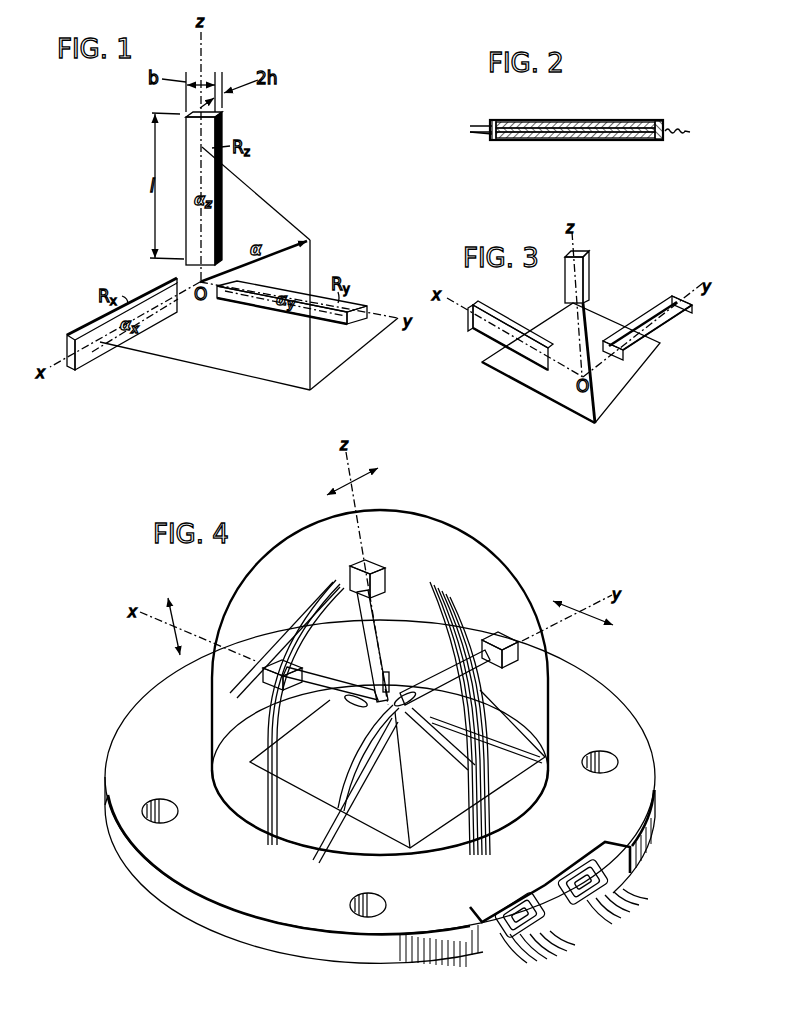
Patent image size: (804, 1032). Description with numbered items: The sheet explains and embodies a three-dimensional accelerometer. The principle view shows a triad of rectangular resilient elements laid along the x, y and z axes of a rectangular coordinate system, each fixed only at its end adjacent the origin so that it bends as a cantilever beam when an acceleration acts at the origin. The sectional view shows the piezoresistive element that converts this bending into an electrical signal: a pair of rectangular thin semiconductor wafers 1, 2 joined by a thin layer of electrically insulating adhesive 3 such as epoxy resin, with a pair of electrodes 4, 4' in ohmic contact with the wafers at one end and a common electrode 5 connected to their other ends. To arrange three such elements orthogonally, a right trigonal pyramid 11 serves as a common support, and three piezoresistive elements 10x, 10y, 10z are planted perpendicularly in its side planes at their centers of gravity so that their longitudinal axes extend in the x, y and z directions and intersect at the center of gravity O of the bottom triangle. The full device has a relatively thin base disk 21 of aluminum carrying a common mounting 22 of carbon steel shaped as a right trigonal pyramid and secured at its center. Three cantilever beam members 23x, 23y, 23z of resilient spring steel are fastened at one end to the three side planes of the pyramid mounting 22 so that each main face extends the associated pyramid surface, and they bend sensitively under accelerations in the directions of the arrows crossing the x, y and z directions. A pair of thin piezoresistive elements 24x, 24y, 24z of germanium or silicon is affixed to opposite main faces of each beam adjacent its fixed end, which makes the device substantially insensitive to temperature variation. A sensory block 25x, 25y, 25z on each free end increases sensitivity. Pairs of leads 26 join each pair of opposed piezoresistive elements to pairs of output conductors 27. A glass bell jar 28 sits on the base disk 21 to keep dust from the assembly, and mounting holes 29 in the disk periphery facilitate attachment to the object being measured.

In FIG. 2, the semiconductor wafer 1 is at (565, 120).
In FIG. 2, the semiconductor wafer 2 is at (556, 140).
In FIG. 2, the electrically insulating adhesive layer 3 is at (601, 121).
In FIG. 2, the electrode 4 is at (481, 121).
In FIG. 2, the electrode 4' is at (478, 145).
In FIG. 2, the common electrode 5 is at (663, 126).
In FIG. 3, the piezoresistive element 10x is at (495, 321).
In FIG. 3, the piezoresistive element 10y is at (677, 314).
In FIG. 3, the piezoresistive element 10z is at (583, 272).
In FIG. 3, the right trigonal pyramid 11 is at (558, 396).
In FIG. 4, the base disk 21 is at (246, 937).
In FIG. 4, the common mounting 22 is at (320, 788).
In FIG. 4, the cantilever beam member 23x is at (322, 683).
In FIG. 4, the cantilever beam member 23y is at (483, 682).
In FIG. 4, the cantilever beam member 23z is at (374, 614).
In FIG. 4, the piezoresistive element 24x is at (351, 706).
In FIG. 4, the piezoresistive element 24y is at (392, 732).
In FIG. 4, the piezoresistive element 24z is at (390, 672).
In FIG. 4, the sensory block 25x is at (268, 679).
In FIG. 4, the sensory block 25y is at (488, 643).
In FIG. 4, the sensory block 25z is at (370, 570).
In FIG. 4, the leads 26 is at (443, 768).
In FIG. 4, the output conductors 27 is at (588, 918).
In FIG. 4, the bell jar 28 is at (456, 538).
In FIG. 4, the mounting holes 29 is at (168, 818).